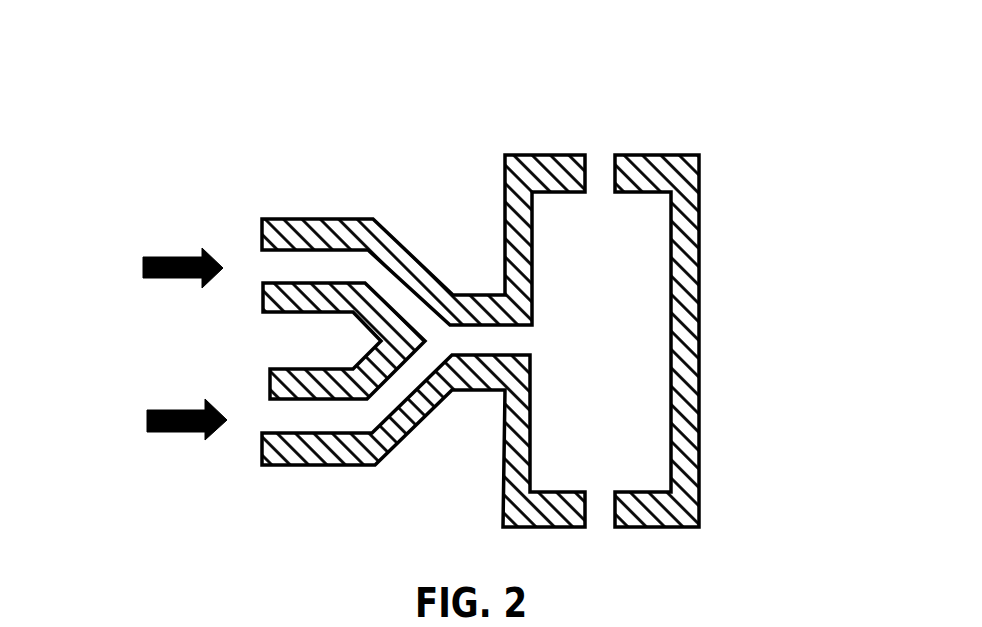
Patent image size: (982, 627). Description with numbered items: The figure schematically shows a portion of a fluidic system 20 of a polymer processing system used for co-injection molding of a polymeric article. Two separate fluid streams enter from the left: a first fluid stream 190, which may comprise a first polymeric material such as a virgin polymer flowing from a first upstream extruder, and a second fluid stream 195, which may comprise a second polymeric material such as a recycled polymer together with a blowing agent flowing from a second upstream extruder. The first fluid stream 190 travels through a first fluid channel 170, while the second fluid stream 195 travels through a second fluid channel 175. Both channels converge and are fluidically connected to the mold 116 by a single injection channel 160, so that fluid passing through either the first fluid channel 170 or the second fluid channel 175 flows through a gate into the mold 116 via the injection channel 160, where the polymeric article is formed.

The fluidic system 20 is at (266, 133).
The mold 116 is at (700, 260).
The injection channel 160 is at (492, 342).
The first fluid channel 170 is at (303, 267).
The second fluid channel 175 is at (295, 418).
The first fluid stream 190 is at (143, 267).
The second fluid stream 195 is at (147, 418).